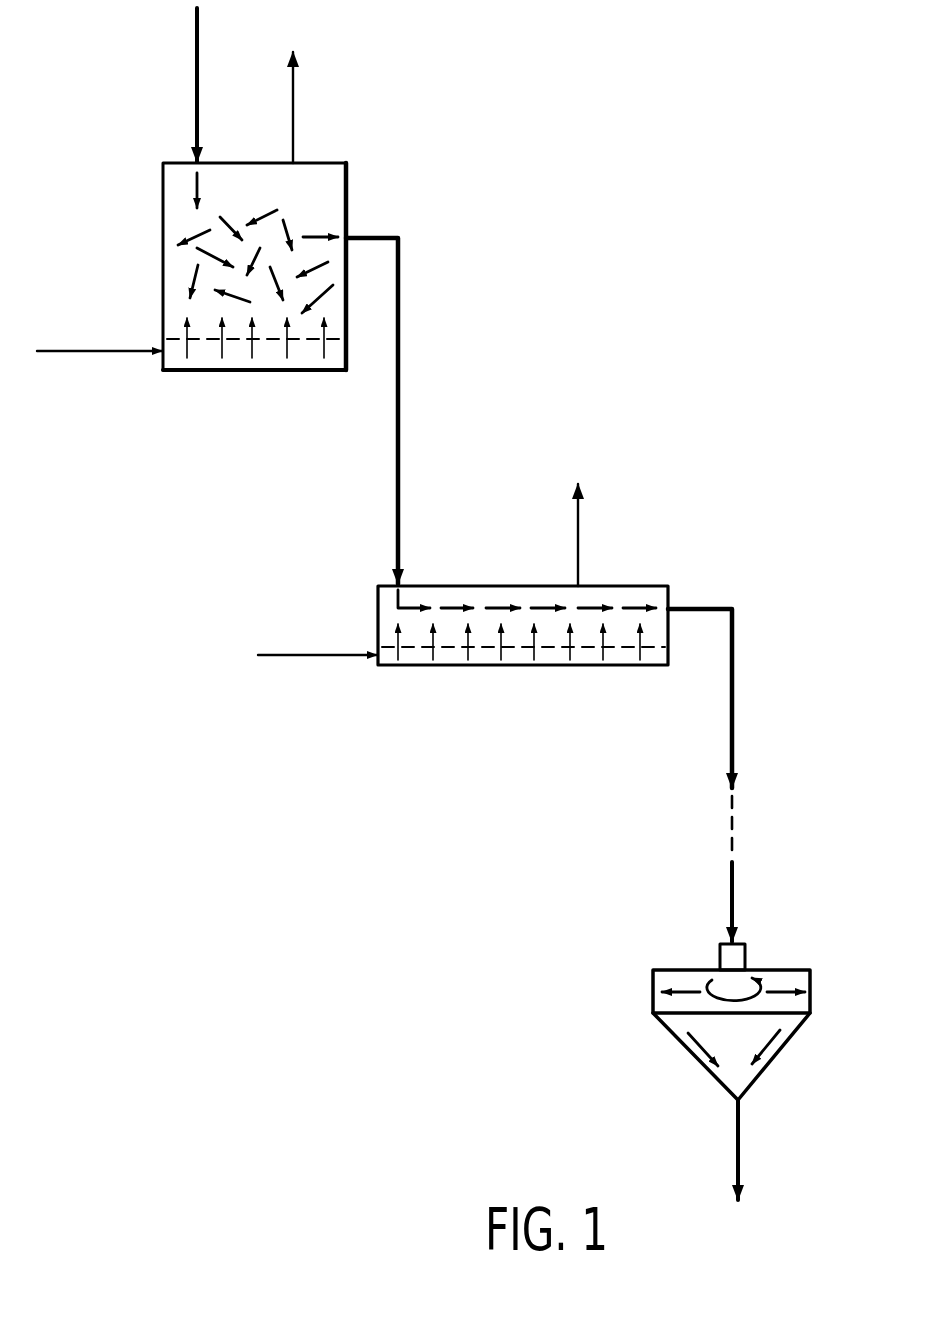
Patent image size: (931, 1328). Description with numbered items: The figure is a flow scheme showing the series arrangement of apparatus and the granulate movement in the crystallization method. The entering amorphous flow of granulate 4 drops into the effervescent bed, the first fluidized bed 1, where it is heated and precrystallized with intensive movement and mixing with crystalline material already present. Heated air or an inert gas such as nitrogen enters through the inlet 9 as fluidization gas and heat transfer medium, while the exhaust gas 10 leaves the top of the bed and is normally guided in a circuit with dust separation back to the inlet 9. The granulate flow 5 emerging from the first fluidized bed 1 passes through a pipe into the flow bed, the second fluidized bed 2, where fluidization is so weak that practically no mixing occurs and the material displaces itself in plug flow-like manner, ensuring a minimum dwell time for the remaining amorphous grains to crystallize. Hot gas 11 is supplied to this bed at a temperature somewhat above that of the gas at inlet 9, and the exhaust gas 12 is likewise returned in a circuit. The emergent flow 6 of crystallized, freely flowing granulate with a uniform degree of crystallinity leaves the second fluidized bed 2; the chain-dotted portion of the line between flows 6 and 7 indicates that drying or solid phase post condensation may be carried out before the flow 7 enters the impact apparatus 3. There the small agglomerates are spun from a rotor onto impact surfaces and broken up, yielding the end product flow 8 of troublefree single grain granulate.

The first fluidized bed 1 is at (260, 370).
The second fluidized bed 2 is at (513, 665).
The impact apparatus 3 is at (680, 1043).
The entering amorphous flow of granulate 4 is at (197, 84).
The granulate flow 5 is at (398, 362).
The emergent flow 6 is at (732, 672).
The flow entering the impact apparatus 7 is at (732, 900).
The end product flow 8 is at (738, 1138).
The inlet 9 is at (115, 351).
The exhaust gas 10 is at (293, 118).
The hot gas 11 is at (310, 655).
The exhaust gas 12 is at (578, 555).